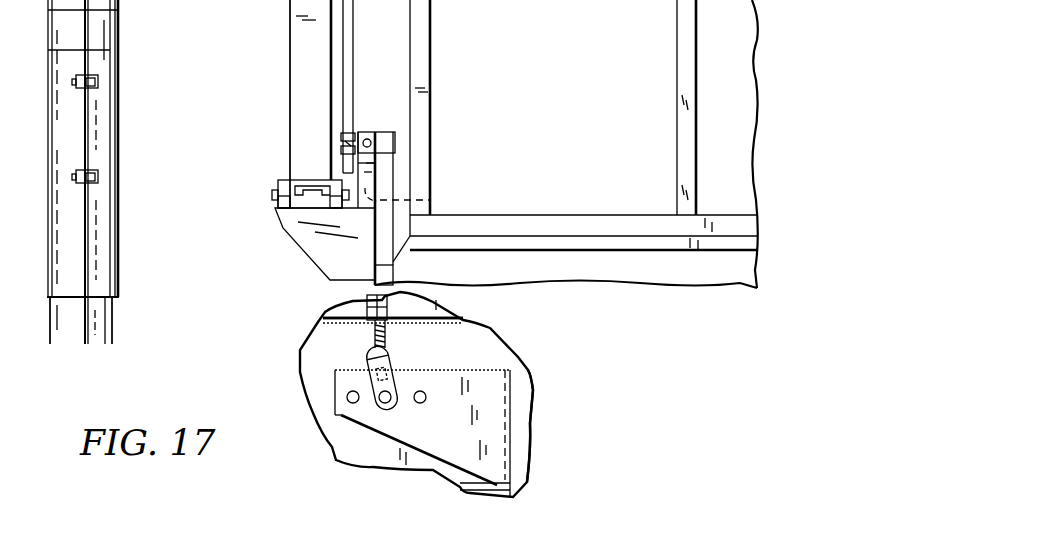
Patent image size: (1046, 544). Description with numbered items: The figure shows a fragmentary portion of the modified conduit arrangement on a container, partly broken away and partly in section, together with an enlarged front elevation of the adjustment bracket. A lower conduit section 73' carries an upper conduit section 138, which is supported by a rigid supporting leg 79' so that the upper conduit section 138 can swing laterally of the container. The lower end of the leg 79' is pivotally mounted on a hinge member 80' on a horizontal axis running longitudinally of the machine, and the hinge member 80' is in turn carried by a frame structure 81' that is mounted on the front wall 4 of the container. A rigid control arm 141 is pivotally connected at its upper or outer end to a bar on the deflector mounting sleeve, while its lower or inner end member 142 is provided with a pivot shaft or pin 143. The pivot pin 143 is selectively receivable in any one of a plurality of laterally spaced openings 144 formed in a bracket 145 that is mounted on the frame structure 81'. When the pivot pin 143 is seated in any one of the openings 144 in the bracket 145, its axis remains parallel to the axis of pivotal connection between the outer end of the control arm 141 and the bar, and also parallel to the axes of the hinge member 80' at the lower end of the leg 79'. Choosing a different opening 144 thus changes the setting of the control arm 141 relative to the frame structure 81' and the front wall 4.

In FIG. 16, the front wall 4 is at (411, 20).
In FIG. 17, the front wall 4 is at (313, 353).
In FIG. 16, the lower conduit section 73' is at (117, 320).
In FIG. 16, the supporting leg 79' is at (262, 104).
In FIG. 16, the hinge member 80' is at (280, 193).
In FIG. 16, the frame structure 81' is at (297, 245).
In FIG. 17, the frame structure 81' is at (568, 426).
In FIG. 16, the upper conduit section 138 is at (120, 118).
In FIG. 17, the control arm 141 is at (353, 302).
In FIG. 16, the inner end member 142 is at (343, 153).
In FIG. 17, the inner end member 142 is at (395, 362).
In FIG. 16, the pivot pin 143 is at (375, 163).
In FIG. 17, the pivot pin 143 is at (385, 403).
In FIG. 17, the openings 144 is at (347, 397).
In FIG. 16, the bracket 145 is at (430, 198).
In FIG. 17, the bracket 145 is at (478, 388).